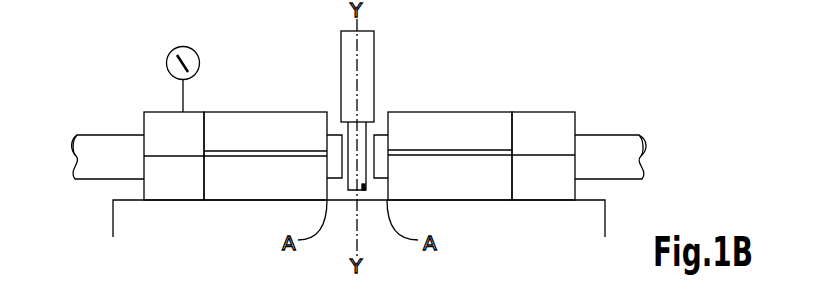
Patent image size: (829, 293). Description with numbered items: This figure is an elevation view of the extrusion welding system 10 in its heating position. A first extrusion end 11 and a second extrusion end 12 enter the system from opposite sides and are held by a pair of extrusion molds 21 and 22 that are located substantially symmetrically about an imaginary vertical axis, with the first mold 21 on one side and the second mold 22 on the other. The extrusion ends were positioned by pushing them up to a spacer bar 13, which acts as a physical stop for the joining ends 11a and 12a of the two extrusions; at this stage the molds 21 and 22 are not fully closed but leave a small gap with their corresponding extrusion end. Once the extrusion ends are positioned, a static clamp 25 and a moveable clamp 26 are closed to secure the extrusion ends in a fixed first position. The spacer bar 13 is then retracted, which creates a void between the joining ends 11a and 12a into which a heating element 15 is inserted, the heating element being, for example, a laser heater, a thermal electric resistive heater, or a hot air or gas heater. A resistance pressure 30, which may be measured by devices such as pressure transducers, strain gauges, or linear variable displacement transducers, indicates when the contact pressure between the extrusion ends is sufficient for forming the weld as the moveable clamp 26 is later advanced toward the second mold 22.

The extrusion welding system 10 is at (441, 67).
The first extrusion end 11 is at (605, 126).
The joining end of first extrusion end 11a is at (375, 132).
The second extrusion end 12 is at (102, 127).
The joining end of second extrusion end 12a is at (342, 135).
The spacer bar 13 is at (367, 73).
The heating element 15 is at (363, 190).
The first extrusion mold 21 is at (480, 107).
The second extrusion mold 22 is at (274, 106).
The static clamp 25 is at (552, 207).
The moveable clamp 26 is at (161, 206).
The resistance pressure 30 is at (167, 60).